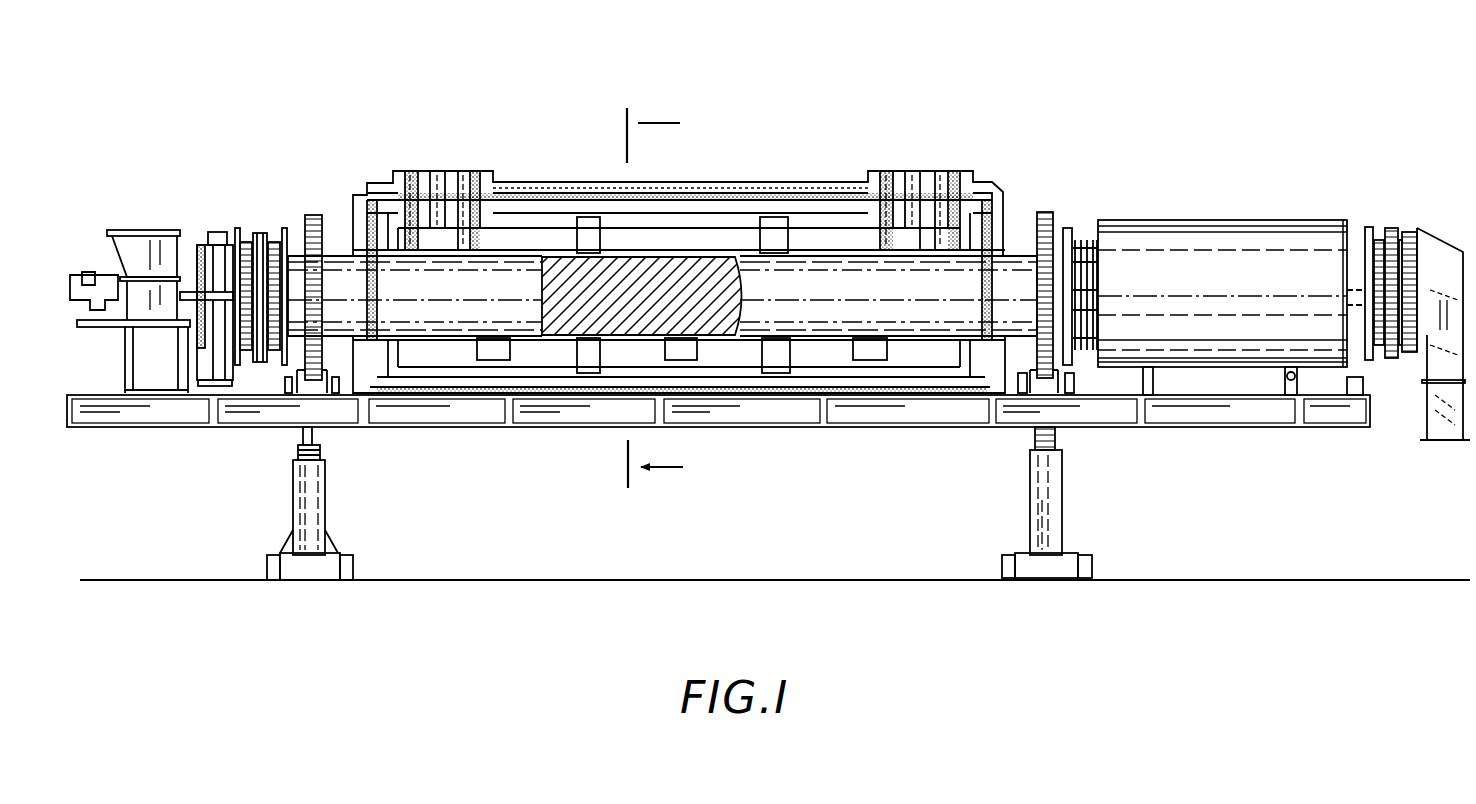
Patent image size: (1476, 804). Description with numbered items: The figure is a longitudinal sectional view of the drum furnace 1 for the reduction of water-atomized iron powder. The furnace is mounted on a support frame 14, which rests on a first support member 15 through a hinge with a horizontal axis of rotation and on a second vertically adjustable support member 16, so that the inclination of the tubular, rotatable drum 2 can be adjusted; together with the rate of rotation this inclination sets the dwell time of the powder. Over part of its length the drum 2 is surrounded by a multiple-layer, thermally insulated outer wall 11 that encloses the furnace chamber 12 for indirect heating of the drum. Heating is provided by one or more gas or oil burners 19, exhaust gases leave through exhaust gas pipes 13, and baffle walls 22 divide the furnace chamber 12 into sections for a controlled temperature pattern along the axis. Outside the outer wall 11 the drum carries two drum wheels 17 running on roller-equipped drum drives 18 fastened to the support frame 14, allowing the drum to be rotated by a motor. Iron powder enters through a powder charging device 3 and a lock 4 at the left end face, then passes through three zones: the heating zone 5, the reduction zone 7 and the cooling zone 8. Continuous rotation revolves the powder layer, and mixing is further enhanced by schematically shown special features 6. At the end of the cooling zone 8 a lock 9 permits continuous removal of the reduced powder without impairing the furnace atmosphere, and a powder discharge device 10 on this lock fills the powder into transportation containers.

The drum furnace 1 is at (376, 70).
The drum 2 is at (1015, 250).
The powder charging device 3 is at (152, 245).
The lock 4 is at (262, 233).
The heating zone 5 is at (458, 325).
The special features 6 is at (578, 340).
The reduction zone 7 is at (811, 323).
The cooling zone 8 is at (1244, 352).
The lock 9 is at (1392, 235).
The powder discharge device 10 is at (1435, 372).
The outer wall 11 is at (708, 198).
The furnace chamber 12 is at (522, 240).
The exhaust gas pipes 13 is at (443, 185).
The support frame 14 is at (970, 410).
The first support member 15 is at (1055, 505).
The second vertically adjustable support member 16 is at (297, 505).
The drum wheels 17 is at (312, 215).
The drum drives 18 is at (308, 394).
The gas or oil burners 19 is at (497, 352).
The baffle walls 22 is at (596, 225).